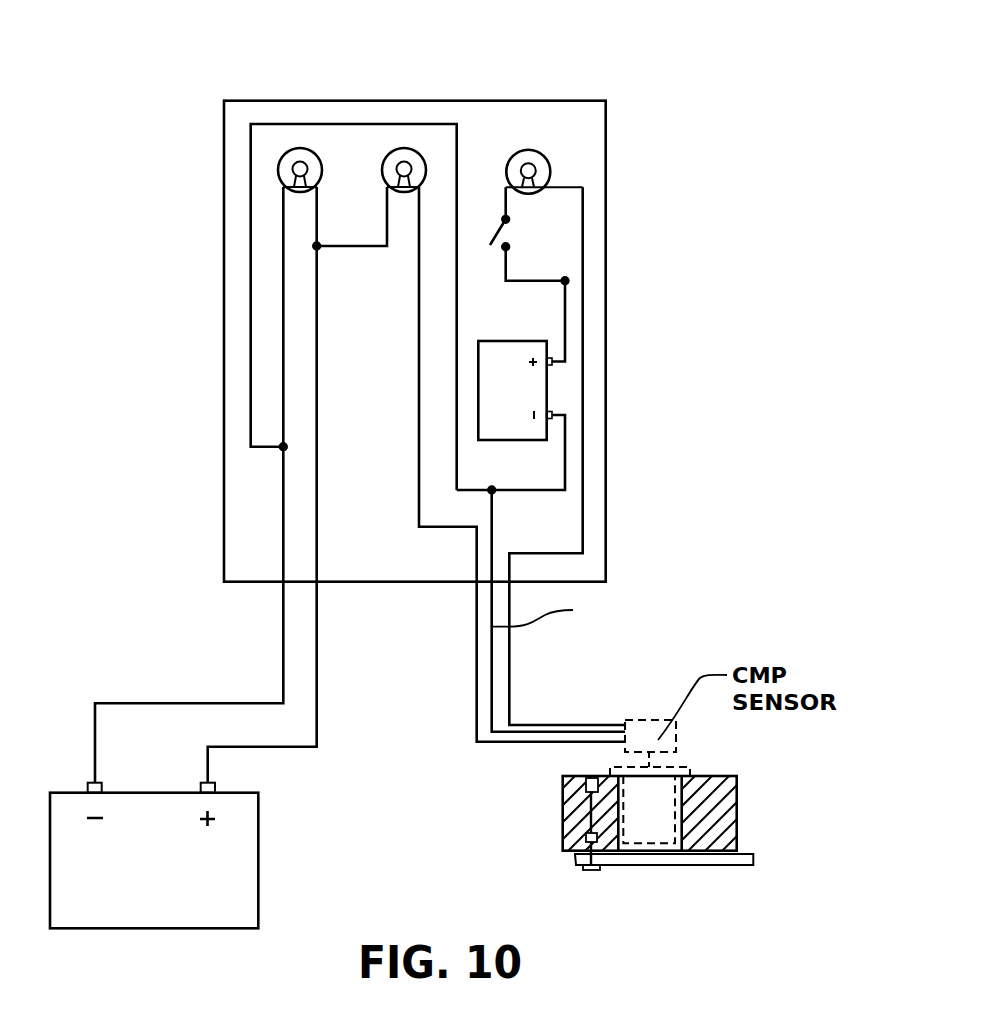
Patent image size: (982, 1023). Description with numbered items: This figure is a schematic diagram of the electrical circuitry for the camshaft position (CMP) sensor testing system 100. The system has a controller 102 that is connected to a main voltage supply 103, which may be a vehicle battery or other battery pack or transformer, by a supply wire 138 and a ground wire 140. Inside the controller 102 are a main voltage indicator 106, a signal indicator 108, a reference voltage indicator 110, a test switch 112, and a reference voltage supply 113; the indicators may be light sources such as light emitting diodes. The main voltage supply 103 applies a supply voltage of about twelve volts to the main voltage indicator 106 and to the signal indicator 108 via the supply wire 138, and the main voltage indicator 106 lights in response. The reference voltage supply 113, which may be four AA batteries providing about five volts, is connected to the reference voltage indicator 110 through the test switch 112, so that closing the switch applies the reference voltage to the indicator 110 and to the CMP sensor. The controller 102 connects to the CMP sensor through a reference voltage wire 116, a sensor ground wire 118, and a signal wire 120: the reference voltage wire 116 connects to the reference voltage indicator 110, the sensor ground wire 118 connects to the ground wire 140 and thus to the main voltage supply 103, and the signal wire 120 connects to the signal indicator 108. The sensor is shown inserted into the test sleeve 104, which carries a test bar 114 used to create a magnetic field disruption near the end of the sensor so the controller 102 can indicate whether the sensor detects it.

The camshaft position (CMP) sensor testing system 100 is at (130, 208).
The controller 102 is at (606, 433).
The main voltage supply 103 is at (258, 870).
The test sleeve 104 is at (727, 797).
The main voltage indicator 106 is at (300, 165).
The signal indicator 108 is at (404, 167).
The reference voltage indicator 110 is at (528, 158).
The test switch 112 is at (507, 232).
The reference voltage supply 113 is at (517, 341).
The test bar 114 is at (650, 860).
The reference voltage wire 116 is at (540, 725).
The sensor ground wire 118 is at (492, 657).
The signal wire 120 is at (473, 728).
The supply wire 138 is at (317, 672).
The ground wire 140 is at (457, 163).